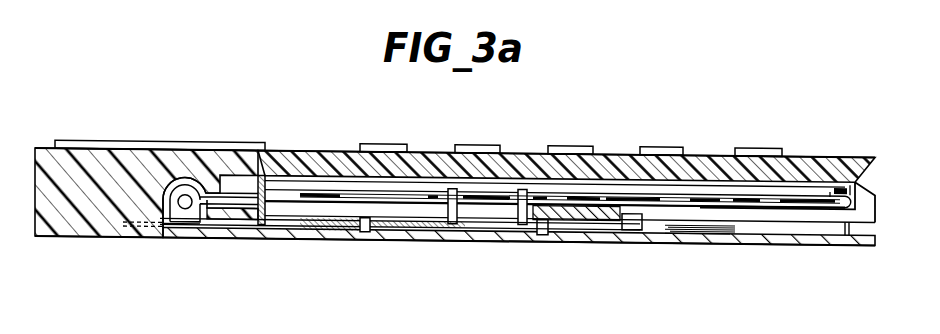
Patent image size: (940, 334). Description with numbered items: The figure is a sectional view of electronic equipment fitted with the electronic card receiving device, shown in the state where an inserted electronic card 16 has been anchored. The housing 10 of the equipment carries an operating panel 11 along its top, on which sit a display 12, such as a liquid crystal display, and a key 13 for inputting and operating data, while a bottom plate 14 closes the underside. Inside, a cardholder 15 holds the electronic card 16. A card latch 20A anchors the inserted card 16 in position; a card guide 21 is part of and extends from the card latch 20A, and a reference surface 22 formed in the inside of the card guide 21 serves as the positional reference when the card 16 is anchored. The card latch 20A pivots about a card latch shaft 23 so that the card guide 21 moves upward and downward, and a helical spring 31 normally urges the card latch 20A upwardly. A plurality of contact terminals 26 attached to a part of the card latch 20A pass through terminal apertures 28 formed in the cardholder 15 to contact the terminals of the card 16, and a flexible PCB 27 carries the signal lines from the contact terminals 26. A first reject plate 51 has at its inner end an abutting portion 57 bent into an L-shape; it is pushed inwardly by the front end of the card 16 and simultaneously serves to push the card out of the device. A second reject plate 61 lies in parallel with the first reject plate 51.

The housing 10 is at (92, 222).
The operating panel 11 is at (514, 147).
The display 12 is at (205, 140).
The key 13 is at (773, 149).
The bottom plate 14 is at (648, 238).
The cardholder 15 is at (846, 234).
The electronic card 16 is at (703, 187).
The card latch 20A is at (787, 221).
The card guide 21 is at (872, 191).
The reference surface 22 is at (841, 185).
The card latch shaft 23 is at (186, 204).
The contact terminals 26 is at (516, 216).
The flexible PCB 27 is at (240, 228).
The terminal apertures 28 is at (478, 190).
The helical spring 31 is at (692, 230).
The first reject plate 51 is at (407, 228).
The abutting portion 57 is at (268, 172).
The second reject plate 61 is at (348, 230).